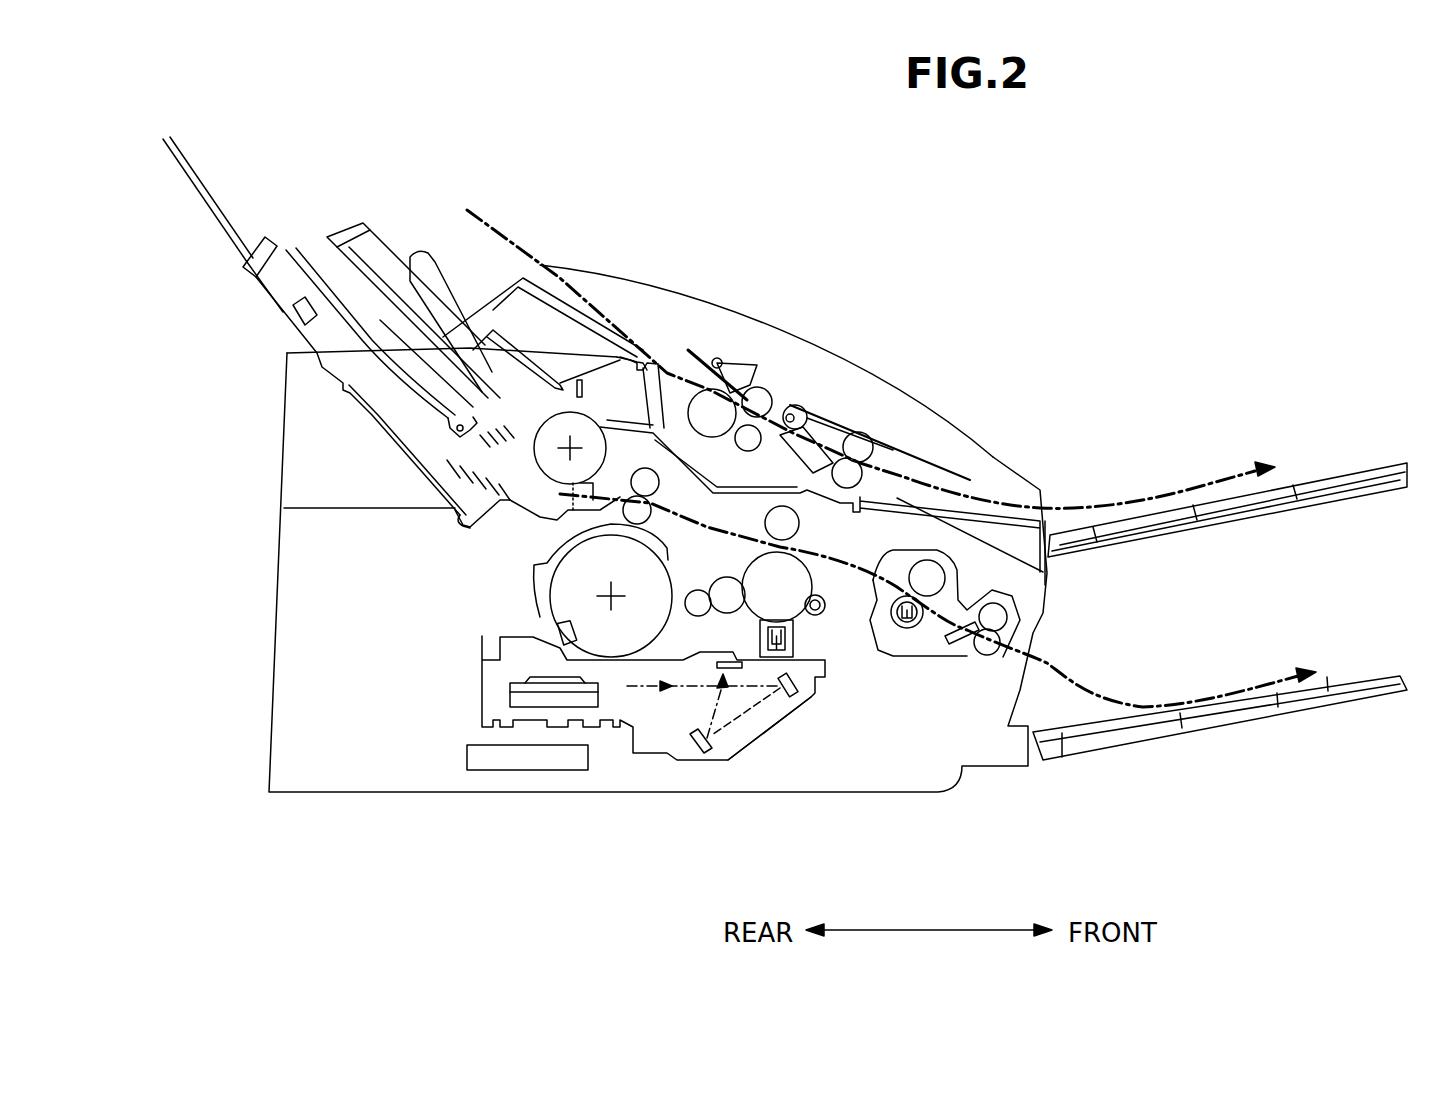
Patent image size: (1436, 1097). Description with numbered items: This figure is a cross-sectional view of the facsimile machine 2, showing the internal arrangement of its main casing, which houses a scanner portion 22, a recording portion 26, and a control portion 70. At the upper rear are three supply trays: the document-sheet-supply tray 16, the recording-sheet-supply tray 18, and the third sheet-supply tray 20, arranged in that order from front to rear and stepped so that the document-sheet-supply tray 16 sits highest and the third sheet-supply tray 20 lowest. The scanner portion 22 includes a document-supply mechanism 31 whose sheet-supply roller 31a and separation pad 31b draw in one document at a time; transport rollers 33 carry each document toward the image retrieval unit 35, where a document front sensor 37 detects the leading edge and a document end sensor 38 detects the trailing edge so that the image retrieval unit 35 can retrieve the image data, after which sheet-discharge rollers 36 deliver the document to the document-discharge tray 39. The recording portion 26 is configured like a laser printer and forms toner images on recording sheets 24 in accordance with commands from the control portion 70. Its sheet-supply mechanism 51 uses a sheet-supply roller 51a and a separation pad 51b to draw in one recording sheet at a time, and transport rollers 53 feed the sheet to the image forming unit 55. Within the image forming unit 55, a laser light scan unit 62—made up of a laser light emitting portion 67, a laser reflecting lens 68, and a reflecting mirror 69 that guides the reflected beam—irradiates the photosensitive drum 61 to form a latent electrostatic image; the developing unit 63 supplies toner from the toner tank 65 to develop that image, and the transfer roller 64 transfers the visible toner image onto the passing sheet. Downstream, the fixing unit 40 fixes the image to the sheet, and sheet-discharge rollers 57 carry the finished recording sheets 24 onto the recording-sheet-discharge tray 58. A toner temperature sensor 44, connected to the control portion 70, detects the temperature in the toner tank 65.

The facsimile machine 2 is at (767, 454).
The document-sheet-supply tray 16 is at (310, 283).
The recording-sheet-supply tray 18 is at (413, 280).
The third sheet-supply tray 20 is at (562, 290).
The scanner portion 22 is at (872, 398).
The recording sheets 24 is at (300, 350).
The recording portion 26 is at (593, 756).
The document-supply mechanism 31 is at (689, 289).
The sheet-supply roller 31a is at (688, 393).
The separation pad 31b is at (735, 385).
The transport rollers 33 is at (785, 403).
The image retrieval unit 35 is at (815, 415).
The sheet-discharge rollers 36 is at (866, 441).
The document front sensor 37 is at (738, 378).
The document end sensor 38 is at (778, 405).
The document-discharge tray 39 is at (1327, 470).
The fixing unit 40 is at (907, 630).
The toner temperature sensor 44 is at (552, 650).
The sheet-supply mechanism 51 is at (385, 479).
The sheet-supply roller 51a is at (543, 420).
The separation pad 51b is at (548, 488).
The transport rollers 53 is at (625, 515).
The image forming unit 55 is at (510, 701).
The sheet-discharge rollers 57 is at (987, 657).
The recording-sheet-discharge tray 58 is at (1312, 708).
The photosensitive drum 61 is at (790, 610).
The laser light scan unit 62 is at (773, 727).
The developing unit 63 is at (727, 630).
The transfer roller 64 is at (795, 530).
The toner tank 65 is at (617, 645).
The laser light emitting portion 67 is at (507, 702).
The laser reflecting lens 68 is at (795, 698).
The reflecting mirror 69 is at (693, 753).
The control portion 70 is at (495, 782).